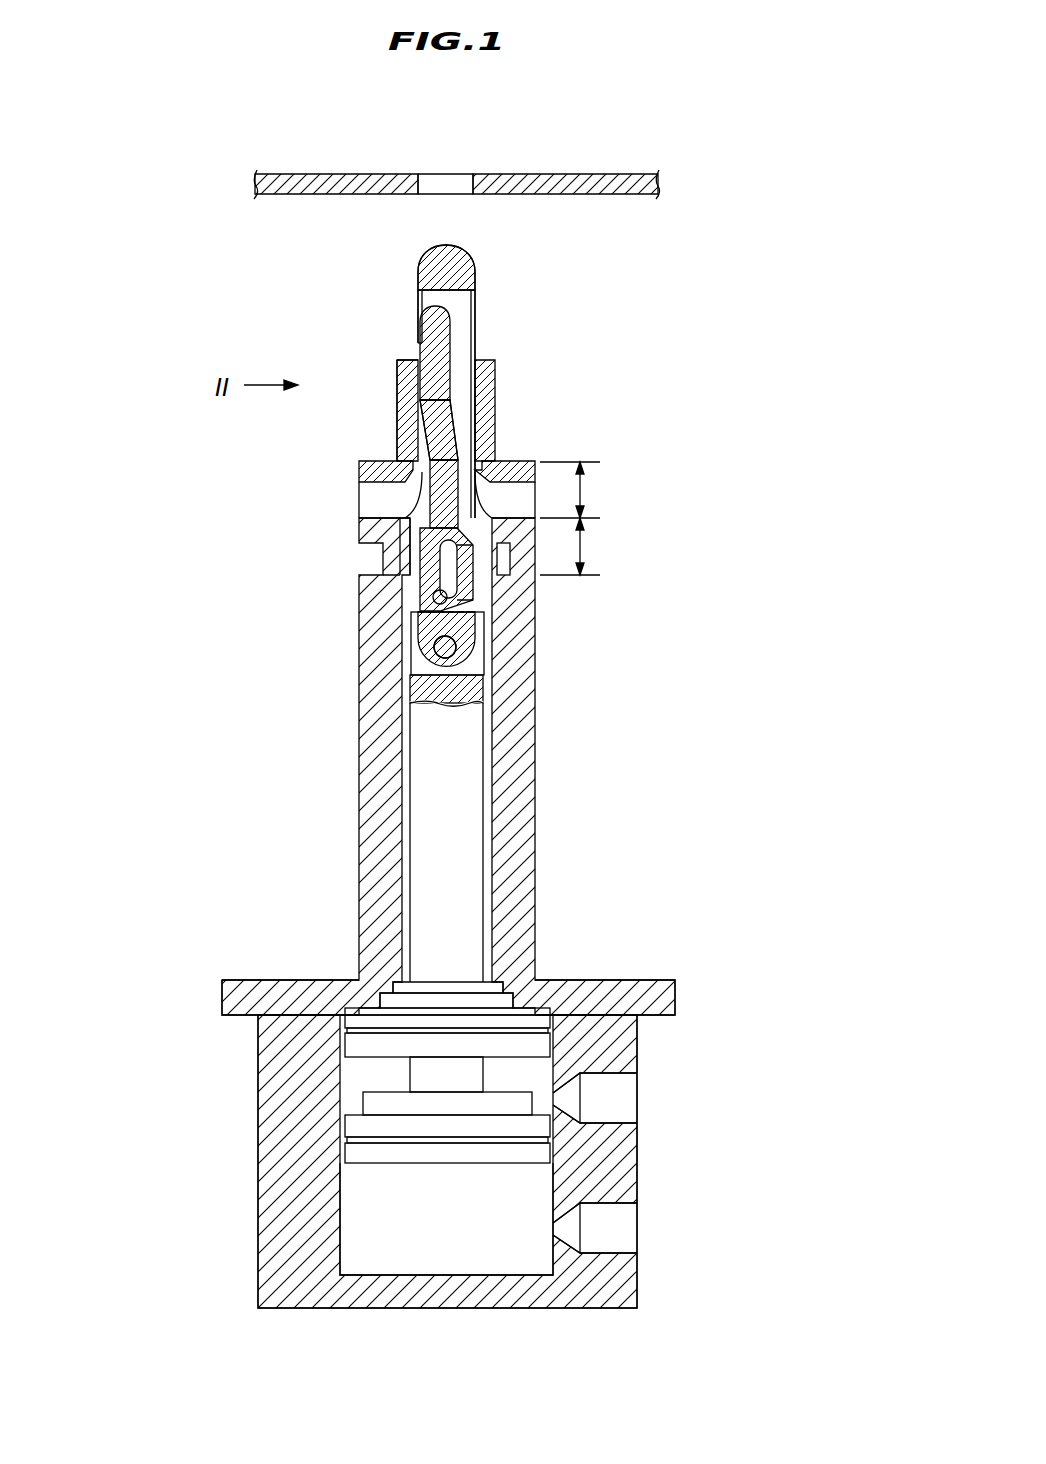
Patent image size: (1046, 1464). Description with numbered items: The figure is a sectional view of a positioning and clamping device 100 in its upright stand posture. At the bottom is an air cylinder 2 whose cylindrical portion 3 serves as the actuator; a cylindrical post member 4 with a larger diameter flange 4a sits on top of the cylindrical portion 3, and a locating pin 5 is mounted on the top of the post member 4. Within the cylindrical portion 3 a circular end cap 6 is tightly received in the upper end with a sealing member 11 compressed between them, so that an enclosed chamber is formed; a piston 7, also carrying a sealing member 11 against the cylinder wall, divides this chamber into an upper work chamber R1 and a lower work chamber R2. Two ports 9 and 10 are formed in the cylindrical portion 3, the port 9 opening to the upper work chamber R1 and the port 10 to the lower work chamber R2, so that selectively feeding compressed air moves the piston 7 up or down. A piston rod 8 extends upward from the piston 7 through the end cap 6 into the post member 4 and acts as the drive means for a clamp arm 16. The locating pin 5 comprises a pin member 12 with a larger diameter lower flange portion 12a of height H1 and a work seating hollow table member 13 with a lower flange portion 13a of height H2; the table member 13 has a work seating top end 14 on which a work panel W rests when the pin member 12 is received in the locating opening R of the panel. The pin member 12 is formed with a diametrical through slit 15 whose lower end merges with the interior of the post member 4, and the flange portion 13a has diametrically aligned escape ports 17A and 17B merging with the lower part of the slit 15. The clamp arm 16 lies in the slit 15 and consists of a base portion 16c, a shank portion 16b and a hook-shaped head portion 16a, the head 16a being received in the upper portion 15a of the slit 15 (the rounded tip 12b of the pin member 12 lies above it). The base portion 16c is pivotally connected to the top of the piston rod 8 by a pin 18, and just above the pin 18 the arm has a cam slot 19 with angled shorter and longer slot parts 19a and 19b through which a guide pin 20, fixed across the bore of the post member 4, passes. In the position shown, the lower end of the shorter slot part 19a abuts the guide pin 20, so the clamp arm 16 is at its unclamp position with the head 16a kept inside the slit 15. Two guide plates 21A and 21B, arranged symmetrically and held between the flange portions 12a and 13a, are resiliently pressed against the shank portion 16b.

The positioning and clamping device 100 is at (692, 291).
The work panel W is at (597, 168).
The locating opening R is at (463, 174).
The air cylinder 2 is at (250, 1246).
The cylindrical portion 3 is at (282, 1121).
The cylindrical post member 4 is at (346, 655).
The flange 4a is at (637, 994).
The locating pin 5 is at (404, 337).
The end cap 6 is at (352, 1047).
The piston 7 is at (362, 1153).
The piston rod 8 is at (428, 925).
The port 9 is at (618, 1096).
The port 10 is at (618, 1236).
The sealing member 11 is at (531, 1027).
The pin member 12 is at (490, 340).
The lower flange portion 12a is at (368, 545).
The pin tip 12b is at (436, 262).
The work seating hollow table member 13 is at (508, 410).
The lower flange portion 13a is at (370, 468).
The work seating top end 14 is at (397, 361).
The through slit 15 is at (472, 385).
The upper portion of slit 15a is at (464, 300).
The clamp arm 16 is at (500, 604).
The hook-shaped head portion 16a is at (440, 330).
The shank portion 16b is at (446, 420).
The base portion 16c is at (462, 636).
The escape port 17A is at (372, 500).
The escape port 17B is at (519, 497).
The pin 18 is at (458, 648).
The cam slot 19 is at (450, 564).
The shorter slot part 19a is at (430, 606).
The longer slot part 19b is at (448, 548).
The guide pin 20 is at (432, 597).
The guide plate 21A is at (406, 459).
The guide plate 21B is at (528, 447).
The thickness of lower flange portion of pin member H1 is at (583, 546).
The thickness of lower flange portion of table member H2 is at (583, 490).
The upper work chamber R1 is at (538, 1072).
The lower work chamber R2 is at (408, 1262).